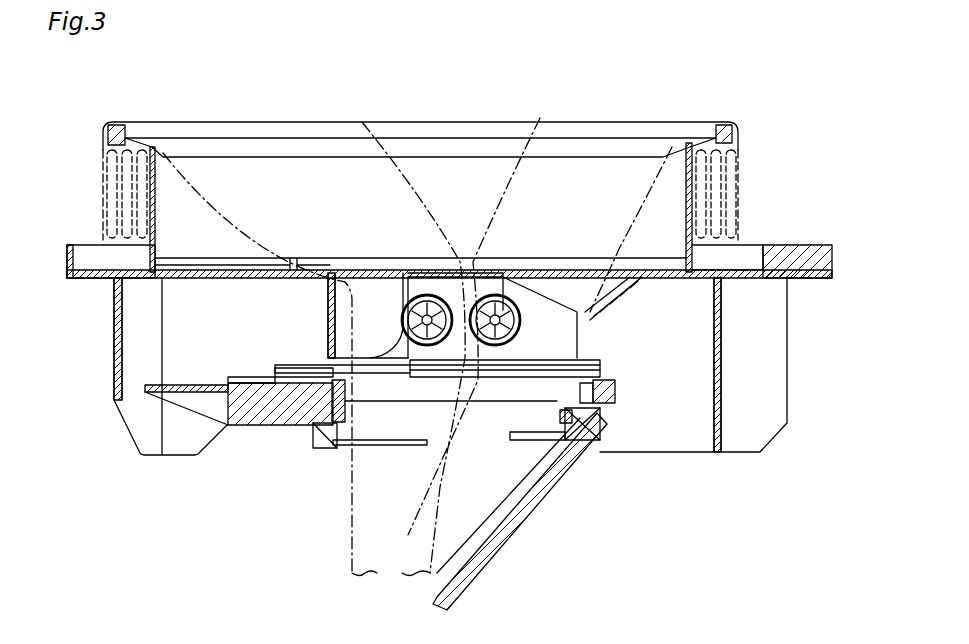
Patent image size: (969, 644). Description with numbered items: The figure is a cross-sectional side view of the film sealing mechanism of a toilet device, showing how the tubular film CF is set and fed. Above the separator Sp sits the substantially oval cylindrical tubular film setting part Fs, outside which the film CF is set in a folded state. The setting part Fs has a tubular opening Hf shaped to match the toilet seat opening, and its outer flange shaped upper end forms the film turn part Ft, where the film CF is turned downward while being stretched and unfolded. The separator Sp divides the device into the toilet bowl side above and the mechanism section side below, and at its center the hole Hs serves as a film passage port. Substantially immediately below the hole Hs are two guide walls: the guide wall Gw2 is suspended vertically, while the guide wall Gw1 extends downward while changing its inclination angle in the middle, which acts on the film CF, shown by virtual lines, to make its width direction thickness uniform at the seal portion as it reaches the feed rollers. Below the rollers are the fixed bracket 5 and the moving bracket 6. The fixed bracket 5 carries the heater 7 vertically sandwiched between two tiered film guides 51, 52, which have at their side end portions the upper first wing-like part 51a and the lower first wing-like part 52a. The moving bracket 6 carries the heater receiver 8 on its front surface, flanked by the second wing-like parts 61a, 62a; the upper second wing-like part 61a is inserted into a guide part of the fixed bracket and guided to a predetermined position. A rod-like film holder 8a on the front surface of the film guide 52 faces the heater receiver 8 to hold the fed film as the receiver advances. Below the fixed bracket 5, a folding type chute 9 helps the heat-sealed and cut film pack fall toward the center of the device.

The film turn part Ft is at (137, 125).
The tubular opening Hf is at (247, 190).
The guide wall Gw2 is at (377, 297).
The hole Hs is at (478, 274).
The guide wall Gw1 is at (560, 292).
The tubular film CF is at (743, 151).
The tubular film setting part Fs is at (140, 220).
The separator Sp is at (713, 263).
The upper second wing-like part 61a is at (390, 374).
The upper first wing-like part 51a is at (545, 368).
The heater receiver 8 is at (355, 423).
The second wing-like part 62a is at (405, 446).
The lower first wing-like part 52a is at (520, 440).
The heater 7 is at (600, 404).
The film holder 8a is at (566, 424).
The film guide 52 is at (585, 441).
The fixed bracket 5 is at (604, 411).
The film guide 51 is at (587, 348).
The moving bracket 6 is at (287, 427).
The chute 9 is at (493, 563).